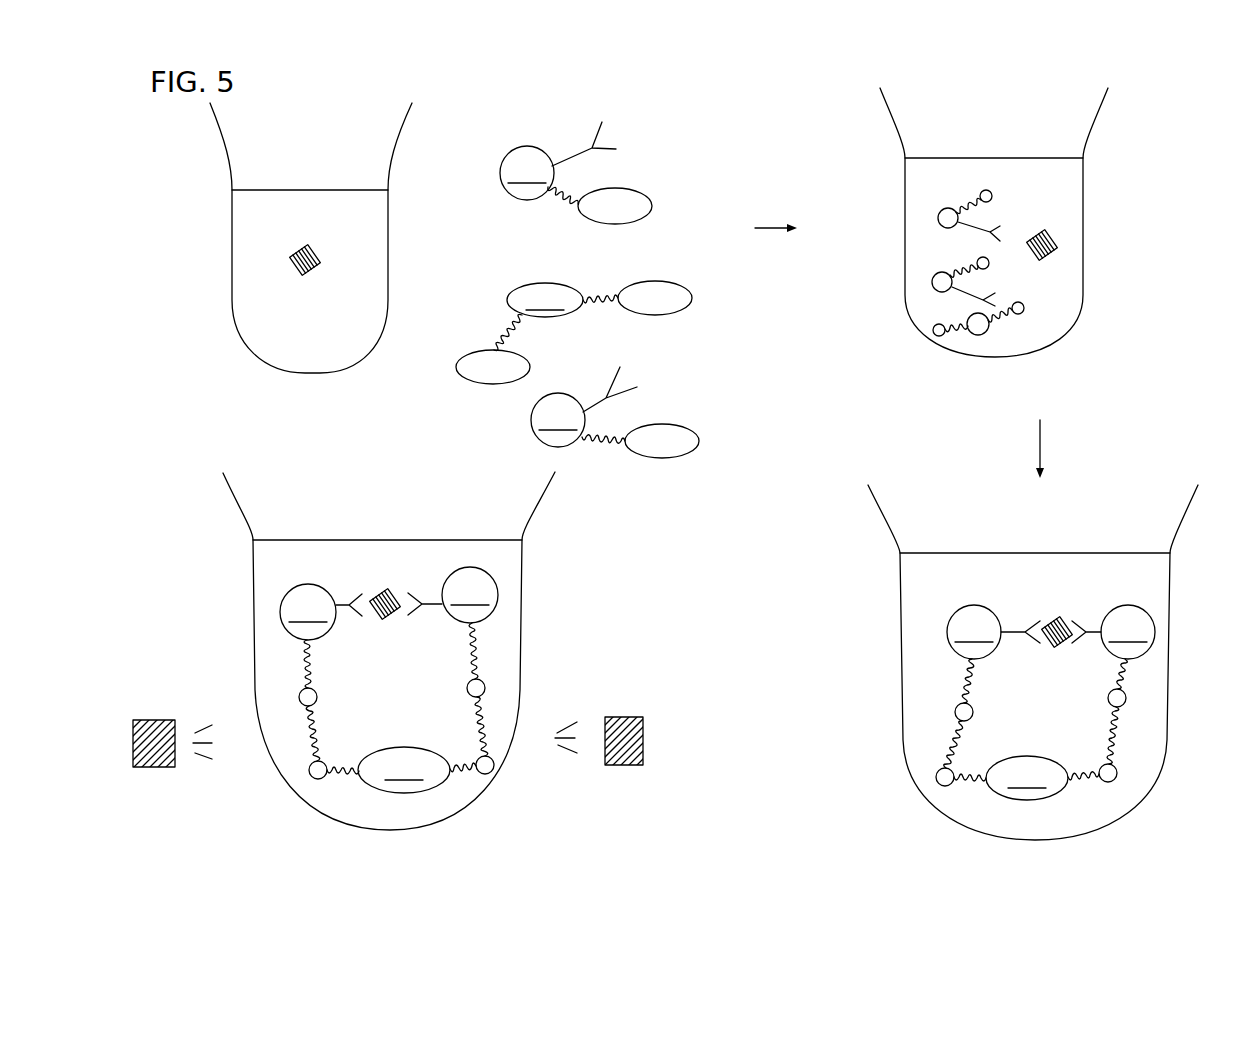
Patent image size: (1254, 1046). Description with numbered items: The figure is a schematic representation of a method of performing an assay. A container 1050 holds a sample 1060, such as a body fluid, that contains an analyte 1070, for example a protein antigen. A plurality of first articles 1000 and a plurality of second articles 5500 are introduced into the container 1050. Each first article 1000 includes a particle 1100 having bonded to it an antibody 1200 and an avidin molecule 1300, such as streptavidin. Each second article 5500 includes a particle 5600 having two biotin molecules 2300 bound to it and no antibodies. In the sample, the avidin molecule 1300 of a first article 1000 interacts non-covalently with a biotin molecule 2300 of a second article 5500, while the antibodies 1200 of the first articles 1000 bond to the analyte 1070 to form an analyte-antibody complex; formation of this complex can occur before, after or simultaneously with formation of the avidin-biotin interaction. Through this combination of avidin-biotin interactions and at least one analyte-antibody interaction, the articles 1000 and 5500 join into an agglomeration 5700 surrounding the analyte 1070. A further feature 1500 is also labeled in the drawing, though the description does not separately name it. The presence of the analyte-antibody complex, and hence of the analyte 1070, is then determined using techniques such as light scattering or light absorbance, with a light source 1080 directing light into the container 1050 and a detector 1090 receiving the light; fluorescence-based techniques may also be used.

The first article 1000 is at (485, 207).
The container 1050 is at (247, 338).
The sample 1060 is at (297, 357).
The analyte 1070 is at (298, 250).
The light source 1080 is at (147, 767).
The detector 1090 is at (625, 765).
The particle 1100 is at (717, 402).
The antibody 1200 is at (567, 150).
The avidin molecule 1300 is at (299, 697).
The linker end 1500 is at (483, 683).
The biotin molecule 2300 is at (318, 780).
The second article 5500 is at (484, 313).
The particle 5600 is at (713, 541).
The agglomeration 5700 is at (500, 641).